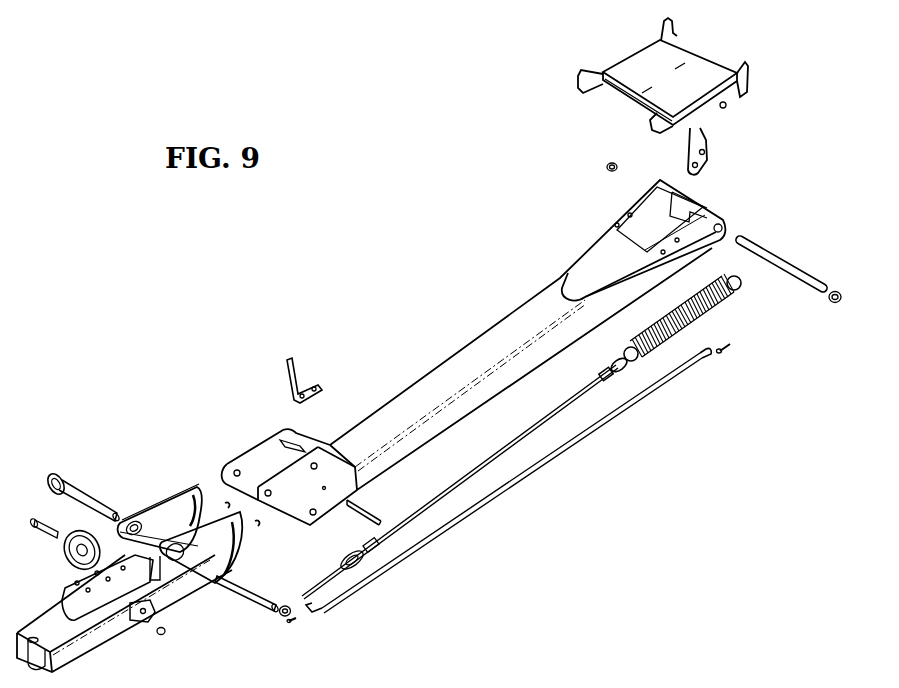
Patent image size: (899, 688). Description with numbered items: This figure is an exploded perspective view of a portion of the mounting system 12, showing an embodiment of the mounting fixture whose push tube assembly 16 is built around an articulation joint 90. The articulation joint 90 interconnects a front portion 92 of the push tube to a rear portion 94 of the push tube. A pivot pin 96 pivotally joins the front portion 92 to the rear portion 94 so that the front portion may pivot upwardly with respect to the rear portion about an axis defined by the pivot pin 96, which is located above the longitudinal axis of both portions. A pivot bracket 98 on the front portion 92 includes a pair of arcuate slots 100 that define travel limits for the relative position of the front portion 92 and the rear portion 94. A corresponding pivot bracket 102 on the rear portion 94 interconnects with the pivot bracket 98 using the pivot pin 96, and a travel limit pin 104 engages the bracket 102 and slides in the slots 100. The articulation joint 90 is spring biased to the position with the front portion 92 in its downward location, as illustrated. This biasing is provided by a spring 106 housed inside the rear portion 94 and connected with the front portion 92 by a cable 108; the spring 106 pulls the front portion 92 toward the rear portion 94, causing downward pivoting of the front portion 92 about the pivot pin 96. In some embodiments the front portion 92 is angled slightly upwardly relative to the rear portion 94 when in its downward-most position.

The mounting system 12 is at (832, 67).
The push tube assembly 16 is at (440, 362).
The articulation joint 90 is at (397, 575).
The front portion 92 is at (103, 642).
The rear portion 94 is at (512, 372).
The pivot pin 96 is at (92, 500).
The pivot bracket 98 is at (169, 498).
The arcuate slots 100 is at (240, 550).
The pivot bracket 102 is at (243, 447).
The travel limit pin 104 is at (248, 596).
The spring 106 is at (712, 310).
The cable 108 is at (462, 478).